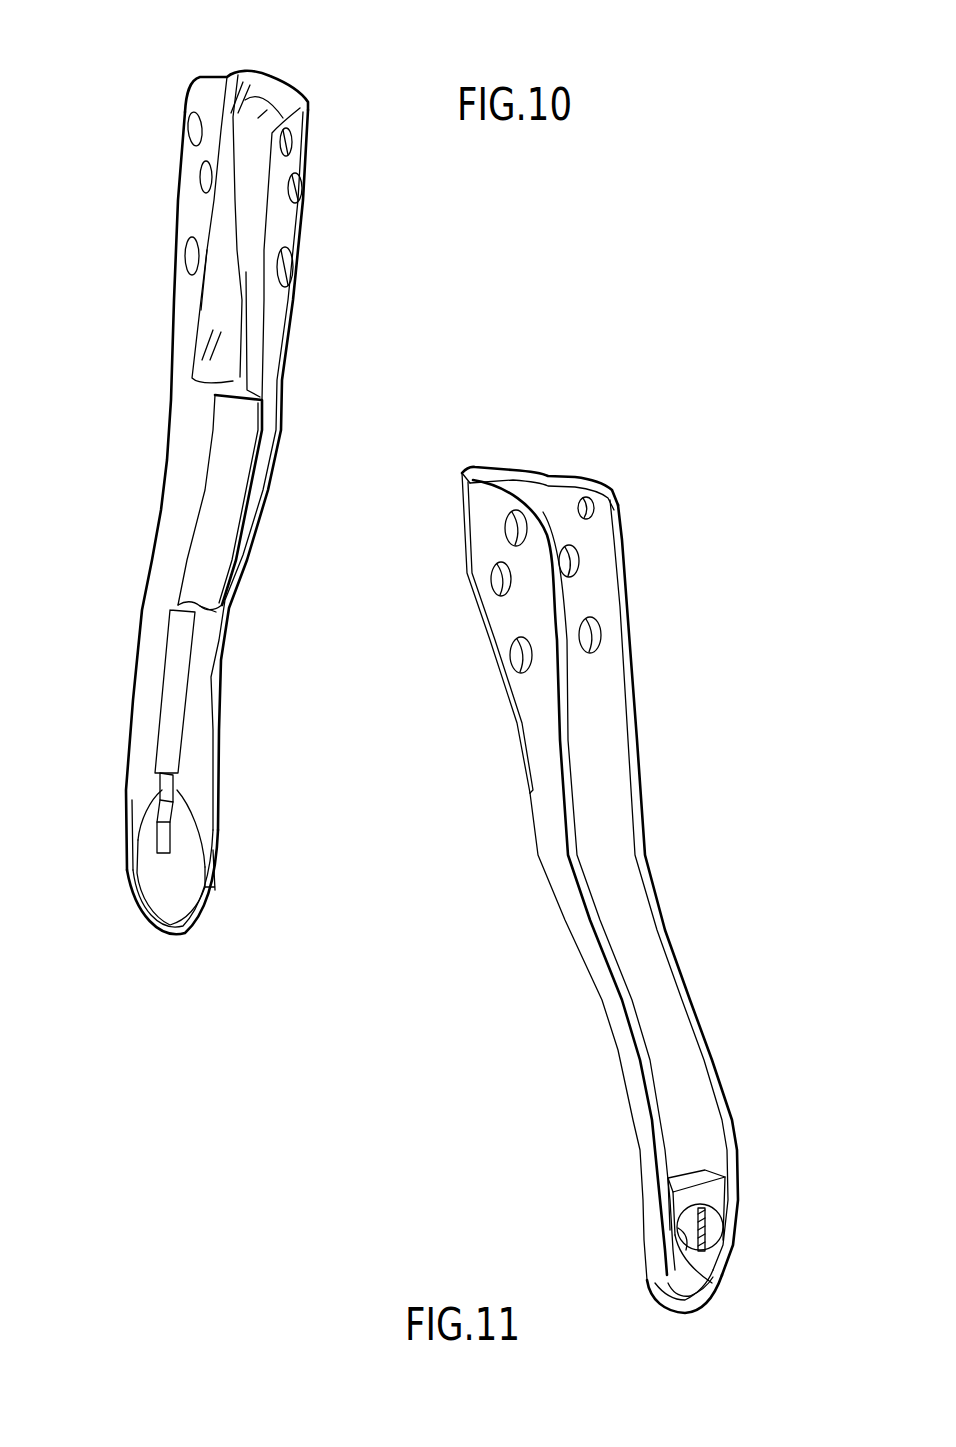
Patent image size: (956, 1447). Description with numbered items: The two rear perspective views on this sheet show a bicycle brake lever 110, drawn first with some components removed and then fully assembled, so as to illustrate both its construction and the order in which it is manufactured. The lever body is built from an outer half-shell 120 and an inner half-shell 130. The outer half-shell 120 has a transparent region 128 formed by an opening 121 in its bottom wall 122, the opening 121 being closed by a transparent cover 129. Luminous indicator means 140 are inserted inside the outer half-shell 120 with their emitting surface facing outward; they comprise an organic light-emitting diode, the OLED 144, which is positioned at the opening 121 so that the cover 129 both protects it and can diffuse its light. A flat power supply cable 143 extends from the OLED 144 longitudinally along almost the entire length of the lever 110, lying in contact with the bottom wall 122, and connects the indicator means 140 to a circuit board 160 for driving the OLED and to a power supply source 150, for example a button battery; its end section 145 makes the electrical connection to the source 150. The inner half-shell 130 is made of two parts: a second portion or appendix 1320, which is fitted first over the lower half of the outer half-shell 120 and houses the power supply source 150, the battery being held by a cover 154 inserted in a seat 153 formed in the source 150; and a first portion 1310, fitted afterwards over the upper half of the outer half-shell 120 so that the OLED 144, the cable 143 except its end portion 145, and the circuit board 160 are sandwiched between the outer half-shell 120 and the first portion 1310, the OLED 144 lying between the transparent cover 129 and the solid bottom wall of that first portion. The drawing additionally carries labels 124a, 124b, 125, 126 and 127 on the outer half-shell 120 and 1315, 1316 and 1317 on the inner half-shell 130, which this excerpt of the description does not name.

In FIG. 10, the brake lever 110 is at (373, 335).
In FIG. 11, the brake lever 110 is at (755, 825).
In FIG. 10, the outer half-shell 120 is at (211, 469).
In FIG. 11, the outer half-shell 120 is at (599, 886).
In FIG. 10, the opening 121 is at (200, 310).
In FIG. 10, the bottom wall 122 is at (210, 408).
In FIG. 10, the first lateral edge 124a is at (146, 594).
In FIG. 10, the second lateral edge 124b is at (266, 513).
In FIG. 10, the fixation hole 125 is at (200, 238).
In FIG. 11, the fixation hole 125 is at (532, 672).
In FIG. 10, the fixation hole 126 is at (198, 143).
In FIG. 11, the fixation hole 126 is at (530, 530).
In FIG. 10, the fixation hole 127 is at (290, 200).
In FIG. 11, the fixation hole 127 is at (512, 583).
In FIG. 10, the transparent region 128 is at (302, 93).
In FIG. 10, the transparent cover 129 is at (245, 70).
In FIG. 11, the transparent cover 129 is at (473, 573).
In FIG. 11, the inner half-shell 130 is at (648, 940).
In FIG. 10, the luminous indicator means 140 is at (230, 487).
In FIG. 10, the power supply cable 143 is at (243, 343).
In FIG. 10, the OLED 144 is at (258, 118).
In FIG. 10, the end section 145 is at (155, 828).
In FIG. 11, the power supply source 150 is at (685, 1243).
In FIG. 11, the seat 153 is at (687, 1233).
In FIG. 11, the cover 154 is at (713, 1217).
In FIG. 10, the circuit board 160 is at (208, 563).
In FIG. 11, the first portion 1310 is at (608, 690).
In FIG. 11, the hole 1315 is at (655, 630).
In FIG. 11, the hole 1316 is at (642, 503).
In FIG. 11, the hole 1317 is at (635, 559).
In FIG. 10, the second portion 1320 is at (147, 860).
In FIG. 11, the second portion 1320 is at (673, 1213).